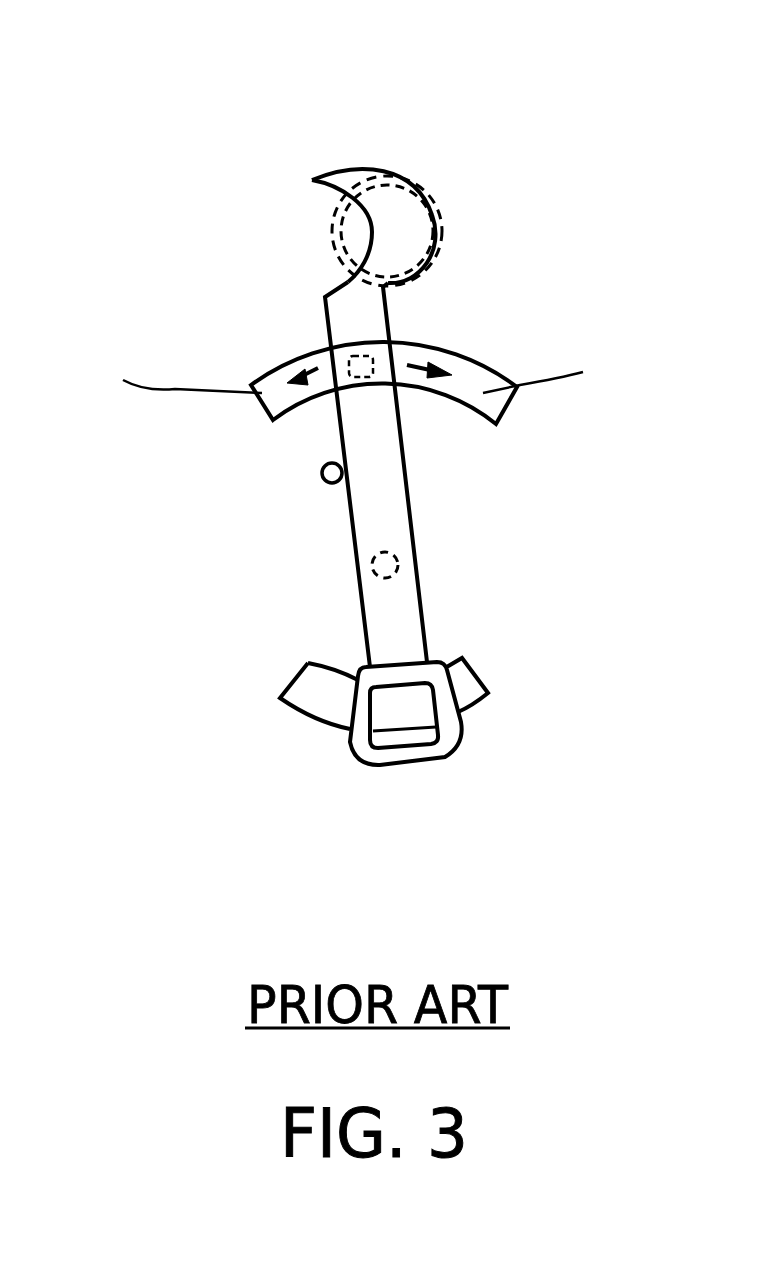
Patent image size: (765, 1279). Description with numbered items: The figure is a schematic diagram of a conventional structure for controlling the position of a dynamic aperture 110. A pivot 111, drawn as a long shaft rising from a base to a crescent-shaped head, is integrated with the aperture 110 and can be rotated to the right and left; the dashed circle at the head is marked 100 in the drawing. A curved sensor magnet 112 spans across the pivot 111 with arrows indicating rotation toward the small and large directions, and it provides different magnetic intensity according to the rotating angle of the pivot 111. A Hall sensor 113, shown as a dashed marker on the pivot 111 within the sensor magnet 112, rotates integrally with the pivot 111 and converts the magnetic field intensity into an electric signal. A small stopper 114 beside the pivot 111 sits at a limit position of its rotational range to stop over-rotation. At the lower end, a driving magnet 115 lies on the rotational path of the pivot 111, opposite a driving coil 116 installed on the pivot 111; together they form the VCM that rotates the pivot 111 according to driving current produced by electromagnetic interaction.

The aperture 110 is at (442, 157).
The rotary knob hinge 100 is at (328, 224).
The pivot 111 is at (337, 310).
The sensor magnet 112 is at (317, 395).
The Hall sensor 113 is at (352, 357).
The stopper 114 is at (322, 474).
The driving magnet 115 is at (292, 688).
The driving coil 116 is at (385, 758).